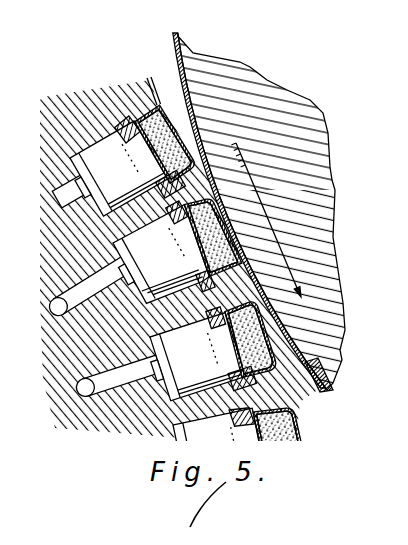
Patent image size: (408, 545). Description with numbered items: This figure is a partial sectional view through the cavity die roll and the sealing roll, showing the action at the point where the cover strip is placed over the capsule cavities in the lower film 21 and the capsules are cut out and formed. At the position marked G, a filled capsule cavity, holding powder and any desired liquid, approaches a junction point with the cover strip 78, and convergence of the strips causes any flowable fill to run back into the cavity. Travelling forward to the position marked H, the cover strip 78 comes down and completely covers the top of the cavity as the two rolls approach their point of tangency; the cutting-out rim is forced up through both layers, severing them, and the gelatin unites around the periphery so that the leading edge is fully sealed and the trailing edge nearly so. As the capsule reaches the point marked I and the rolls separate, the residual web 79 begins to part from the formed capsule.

The lower film 21 is at (134, 104).
The cover strip 78 is at (177, 43).
The residual web 79 is at (318, 392).
The position G is at (121, 172).
The position H is at (142, 274).
The position I is at (173, 366).